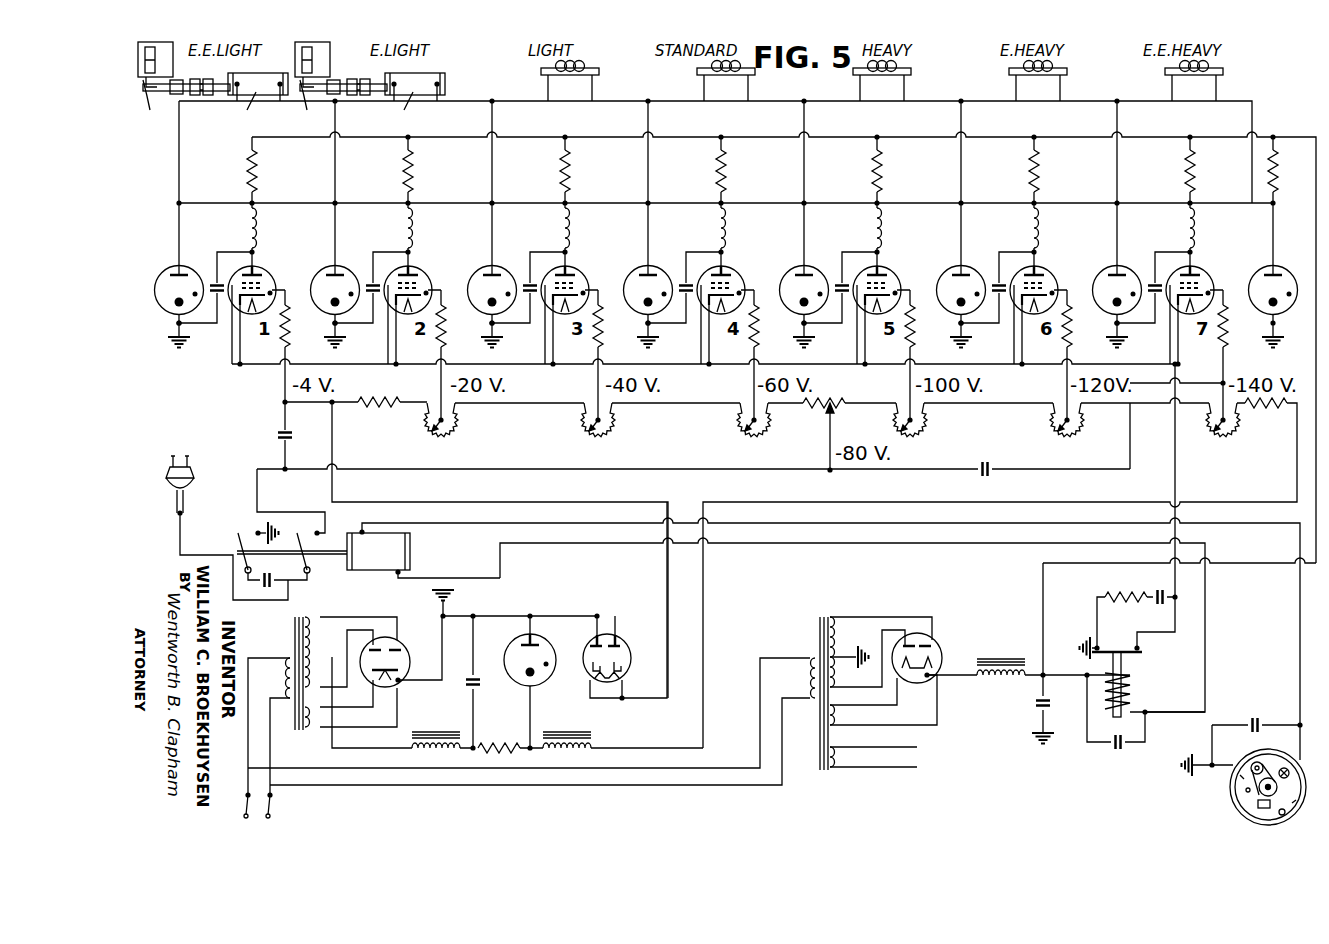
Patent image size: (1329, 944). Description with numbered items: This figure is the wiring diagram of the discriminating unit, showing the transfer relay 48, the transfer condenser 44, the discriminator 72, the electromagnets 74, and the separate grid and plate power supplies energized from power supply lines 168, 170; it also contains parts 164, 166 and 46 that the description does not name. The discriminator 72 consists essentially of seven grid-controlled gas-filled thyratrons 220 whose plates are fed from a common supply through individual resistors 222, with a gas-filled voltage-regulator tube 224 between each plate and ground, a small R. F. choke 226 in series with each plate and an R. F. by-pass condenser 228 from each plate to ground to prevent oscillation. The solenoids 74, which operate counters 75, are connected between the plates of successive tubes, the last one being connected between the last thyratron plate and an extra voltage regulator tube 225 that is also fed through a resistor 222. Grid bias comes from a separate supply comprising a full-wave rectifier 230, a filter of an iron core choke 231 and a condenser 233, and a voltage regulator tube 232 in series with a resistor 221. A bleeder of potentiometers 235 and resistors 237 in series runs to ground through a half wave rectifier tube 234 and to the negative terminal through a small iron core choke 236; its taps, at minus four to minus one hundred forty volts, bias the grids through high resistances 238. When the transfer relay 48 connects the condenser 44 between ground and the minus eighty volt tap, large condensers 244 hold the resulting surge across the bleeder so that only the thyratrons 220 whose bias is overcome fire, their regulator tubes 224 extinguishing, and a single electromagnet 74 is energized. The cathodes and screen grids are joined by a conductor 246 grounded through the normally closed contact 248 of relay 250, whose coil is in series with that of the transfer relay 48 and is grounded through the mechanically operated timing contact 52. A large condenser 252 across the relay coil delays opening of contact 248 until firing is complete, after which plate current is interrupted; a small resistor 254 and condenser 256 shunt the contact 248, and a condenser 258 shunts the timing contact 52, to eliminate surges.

The discriminator 72 is at (1245, 100).
The solenoids 74 is at (1204, 101).
The counters 75 is at (291, 87).
The plug 164 is at (174, 457).
The plug prong 166 is at (187, 457).
The switch 46 is at (255, 529).
The transfer relay 48 is at (388, 558).
The transfer condenser 44 is at (272, 585).
The power supply line 168 is at (275, 818).
The power supply line 170 is at (252, 782).
The thyratrons 220 is at (1201, 265).
The resistor 221 is at (497, 755).
The resistors 222 is at (1278, 165).
The voltage-regulator tube 224 is at (1124, 263).
The extra voltage regulator tube 225 is at (1282, 265).
The R. F. choke 226 is at (1200, 210).
The R. F. by-pass condenser 228 is at (1154, 268).
The full-wave rectifier 230 is at (405, 640).
The iron core choke 231 is at (453, 730).
The voltage regulator tube 232 is at (548, 680).
The condenser 233 is at (483, 690).
The half wave rectifier tube 234 is at (648, 610).
The potentiometers 235 is at (1212, 430).
The small iron core choke 236 is at (592, 732).
The resistors 237 is at (1270, 410).
The high resistances 238 is at (1224, 303).
The condensers 244 is at (992, 474).
The conductor 246 is at (1002, 366).
The normally closed contact 248 is at (1100, 648).
The relay 250 is at (1130, 688).
The large condenser 252 is at (1112, 752).
The small resistor 254 is at (1115, 605).
The condenser 256 is at (1150, 592).
The condenser 258 is at (1275, 692).
The timing contact 52 is at (1232, 795).